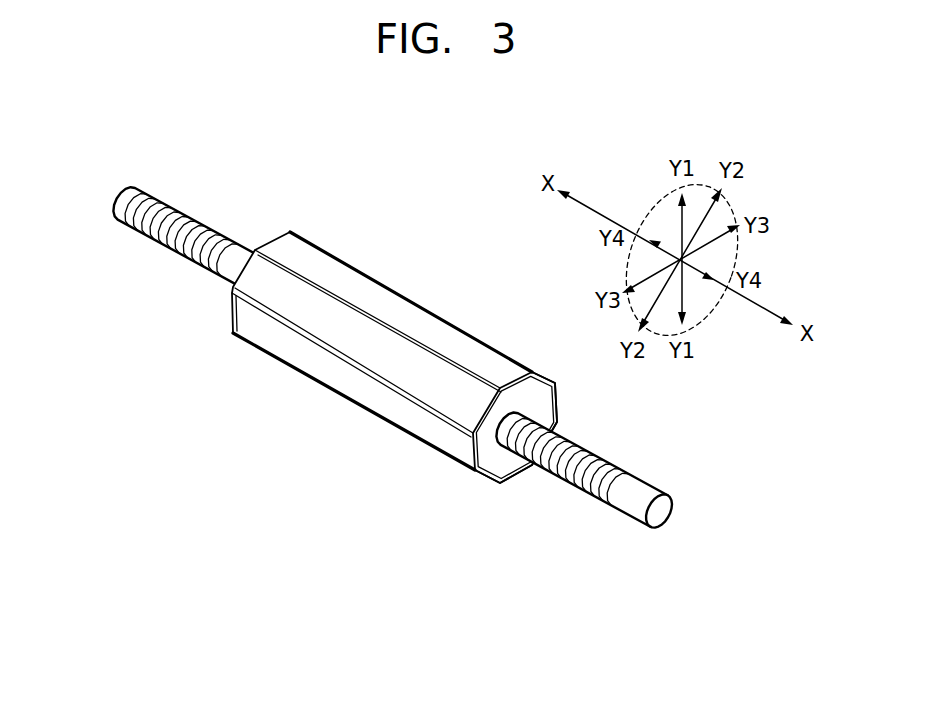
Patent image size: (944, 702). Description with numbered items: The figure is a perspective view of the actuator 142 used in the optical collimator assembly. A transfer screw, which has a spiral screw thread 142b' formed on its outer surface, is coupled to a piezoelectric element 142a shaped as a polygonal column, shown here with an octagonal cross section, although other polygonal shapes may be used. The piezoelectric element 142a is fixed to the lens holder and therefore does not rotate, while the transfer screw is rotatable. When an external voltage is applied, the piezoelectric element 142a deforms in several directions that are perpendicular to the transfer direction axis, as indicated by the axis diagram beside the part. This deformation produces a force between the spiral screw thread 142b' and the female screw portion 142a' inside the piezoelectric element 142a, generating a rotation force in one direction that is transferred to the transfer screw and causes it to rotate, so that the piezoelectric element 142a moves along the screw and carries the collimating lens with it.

The actuator 142 is at (392, 388).
The piezoelectric element 142a is at (394, 371).
The female screw portion 142a' is at (503, 456).
The spiral screw thread 142b' is at (636, 474).